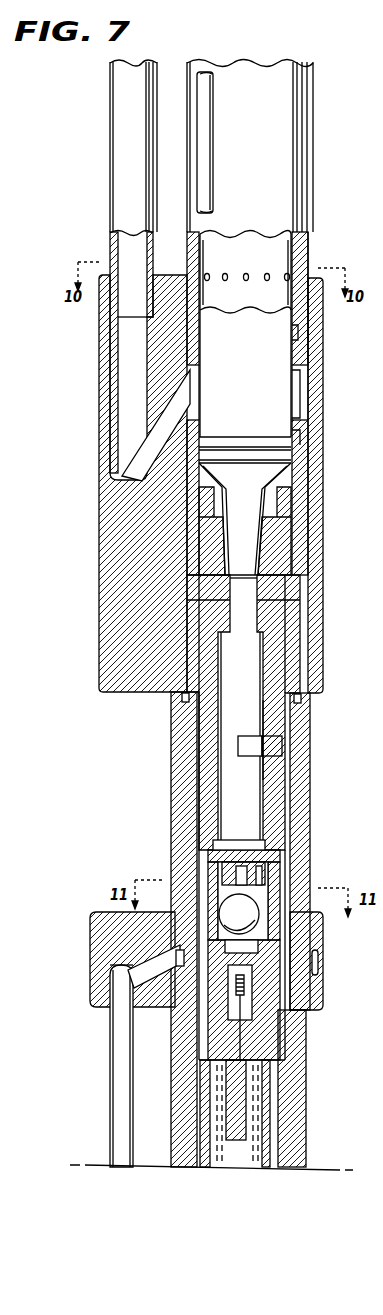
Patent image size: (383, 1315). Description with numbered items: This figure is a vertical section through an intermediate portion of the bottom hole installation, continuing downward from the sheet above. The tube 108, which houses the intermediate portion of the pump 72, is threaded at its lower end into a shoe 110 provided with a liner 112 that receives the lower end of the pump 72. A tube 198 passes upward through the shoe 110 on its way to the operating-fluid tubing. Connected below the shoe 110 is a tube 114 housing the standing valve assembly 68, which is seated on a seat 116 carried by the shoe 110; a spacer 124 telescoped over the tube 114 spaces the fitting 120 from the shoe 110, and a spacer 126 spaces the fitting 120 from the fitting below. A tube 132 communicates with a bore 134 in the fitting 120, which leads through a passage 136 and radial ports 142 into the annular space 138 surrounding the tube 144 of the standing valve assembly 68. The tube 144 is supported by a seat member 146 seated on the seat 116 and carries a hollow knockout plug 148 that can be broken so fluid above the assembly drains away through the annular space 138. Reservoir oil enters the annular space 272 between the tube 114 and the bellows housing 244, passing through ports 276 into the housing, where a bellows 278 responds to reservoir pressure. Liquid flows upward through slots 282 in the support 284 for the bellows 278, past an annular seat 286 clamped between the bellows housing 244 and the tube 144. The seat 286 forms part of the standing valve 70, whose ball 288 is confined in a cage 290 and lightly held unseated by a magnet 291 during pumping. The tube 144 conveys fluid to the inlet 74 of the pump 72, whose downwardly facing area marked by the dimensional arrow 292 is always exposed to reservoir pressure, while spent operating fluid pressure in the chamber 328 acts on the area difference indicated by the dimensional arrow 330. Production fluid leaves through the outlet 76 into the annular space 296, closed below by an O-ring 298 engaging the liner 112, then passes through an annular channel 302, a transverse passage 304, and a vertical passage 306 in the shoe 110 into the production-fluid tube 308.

The shoe 110 is at (309, 459).
The production-fluid tube 308 is at (119, 177).
The vertical passage 306 is at (118, 396).
The transverse passage 304 is at (128, 444).
The tube 108 is at (304, 176).
The tube 198 is at (211, 151).
The annular channel 302 is at (298, 416).
The pump 72 is at (283, 240).
The outlet 76 is at (269, 272).
The annular space 296 is at (290, 332).
The liner 112 is at (299, 437).
The O-ring 298 is at (296, 452).
The chamber 328 is at (294, 502).
The seat member 146 is at (276, 554).
The dimensional arrow 330 is at (253, 462).
The inlet 74 is at (254, 513).
The standing valve assembly 68 is at (282, 672).
The seat 116 is at (290, 569).
The dimensional arrow 292 is at (250, 577).
The tube 144 is at (272, 716).
The knockout plug 148 is at (244, 756).
The spacer 124 is at (172, 812).
The annular space 138 is at (199, 820).
The tube 114 is at (296, 740).
The support 284 is at (284, 974).
The spacer 126 is at (302, 1107).
The fitting 120 is at (93, 978).
The tube 132 is at (111, 1098).
The passage 136 is at (152, 960).
The bore 134 is at (116, 964).
The radial ports 142 is at (187, 974).
The cage 290 is at (292, 851).
The magnet 291 is at (231, 857).
The standing valve 70 is at (256, 899).
The ball 288 is at (246, 910).
The annular seat 286 is at (272, 929).
The slots 282 is at (266, 947).
The ports 276 is at (282, 1039).
The bellows 278 is at (258, 1064).
The bellows housing 244 is at (272, 1139).
The annular space 272 is at (272, 1166).